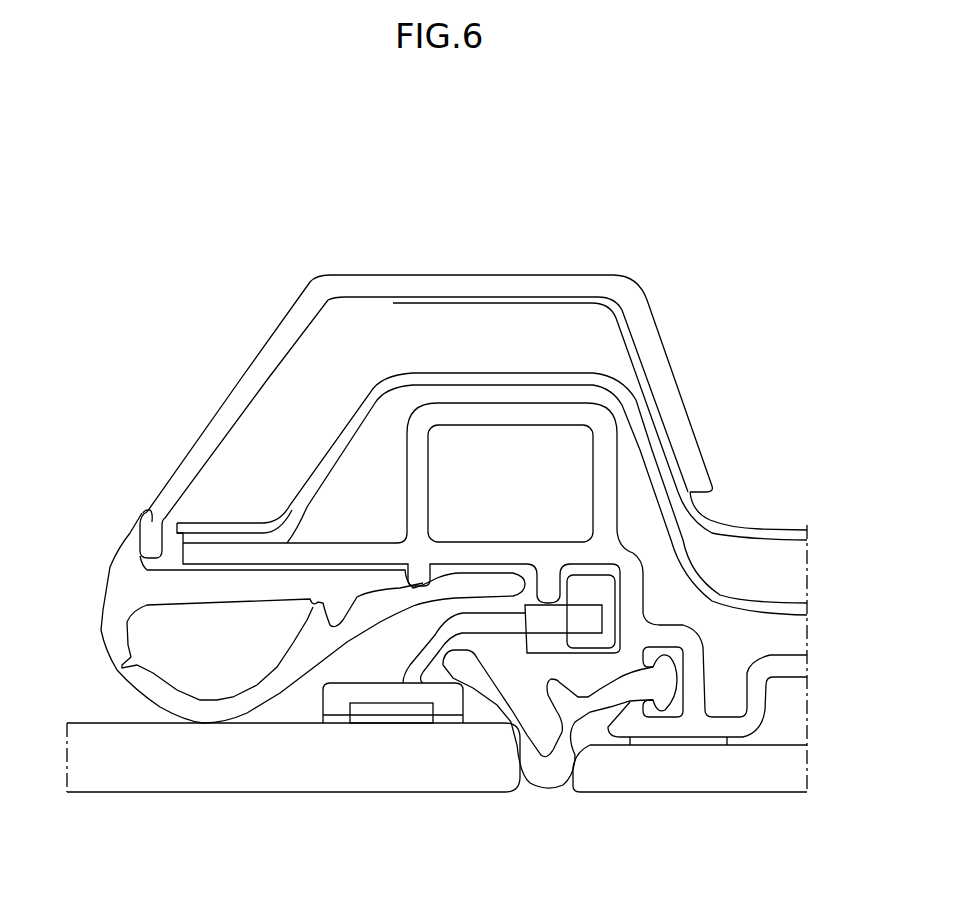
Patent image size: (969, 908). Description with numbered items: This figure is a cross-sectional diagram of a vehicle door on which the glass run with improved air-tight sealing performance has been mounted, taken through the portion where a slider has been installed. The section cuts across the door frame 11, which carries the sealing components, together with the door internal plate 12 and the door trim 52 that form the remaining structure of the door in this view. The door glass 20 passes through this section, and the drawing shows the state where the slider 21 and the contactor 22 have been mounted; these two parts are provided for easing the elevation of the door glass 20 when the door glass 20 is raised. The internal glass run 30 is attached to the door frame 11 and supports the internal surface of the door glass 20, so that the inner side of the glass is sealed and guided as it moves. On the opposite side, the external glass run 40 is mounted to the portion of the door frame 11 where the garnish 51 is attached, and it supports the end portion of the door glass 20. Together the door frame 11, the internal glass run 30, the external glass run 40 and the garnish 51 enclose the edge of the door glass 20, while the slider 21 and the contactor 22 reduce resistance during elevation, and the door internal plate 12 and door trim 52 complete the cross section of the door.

The door frame 11 is at (693, 650).
The door internal plate 12 is at (768, 535).
The door glass 20 is at (257, 777).
The slider 21 is at (505, 617).
The contactor 22 is at (598, 588).
The internal glass run 30 is at (122, 597).
The external glass run 40 is at (580, 718).
The garnish 51 is at (728, 776).
The door trim 52 is at (328, 288).